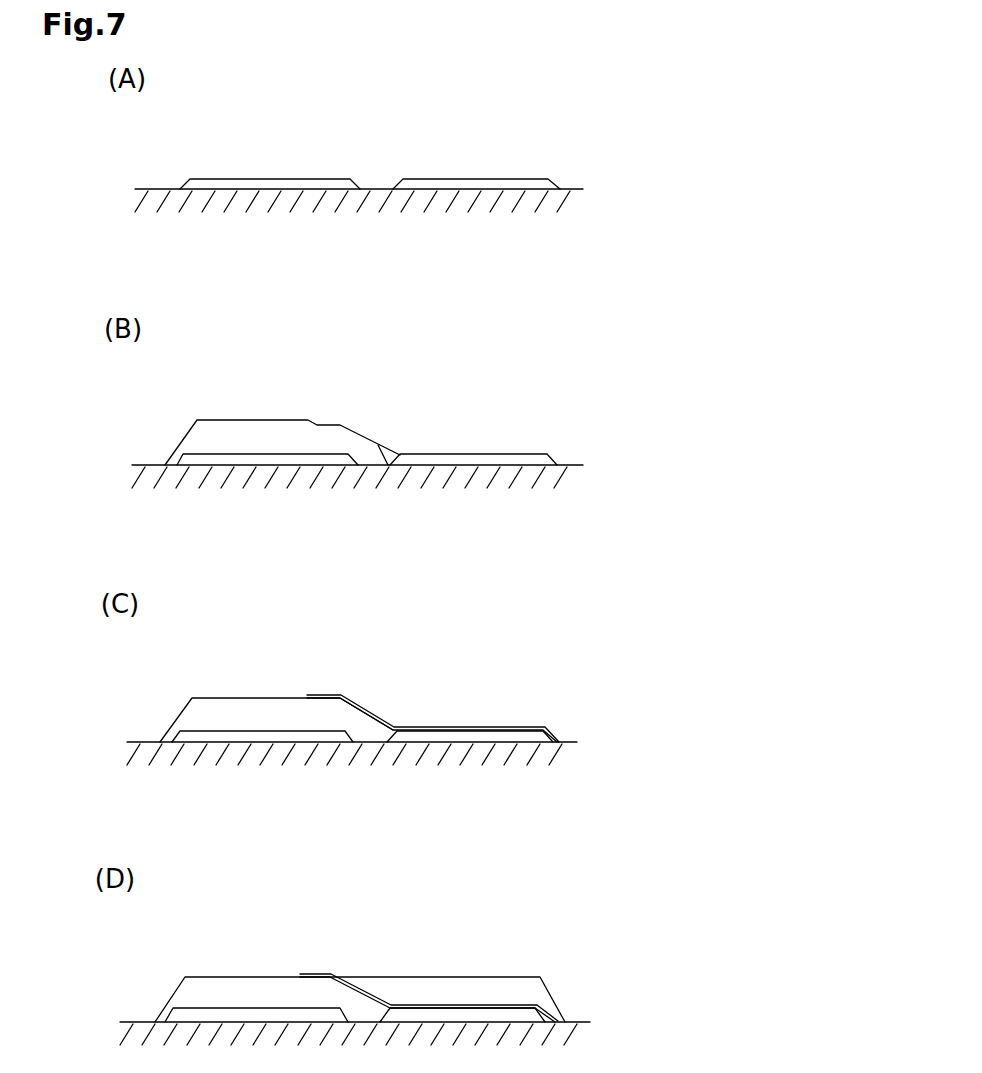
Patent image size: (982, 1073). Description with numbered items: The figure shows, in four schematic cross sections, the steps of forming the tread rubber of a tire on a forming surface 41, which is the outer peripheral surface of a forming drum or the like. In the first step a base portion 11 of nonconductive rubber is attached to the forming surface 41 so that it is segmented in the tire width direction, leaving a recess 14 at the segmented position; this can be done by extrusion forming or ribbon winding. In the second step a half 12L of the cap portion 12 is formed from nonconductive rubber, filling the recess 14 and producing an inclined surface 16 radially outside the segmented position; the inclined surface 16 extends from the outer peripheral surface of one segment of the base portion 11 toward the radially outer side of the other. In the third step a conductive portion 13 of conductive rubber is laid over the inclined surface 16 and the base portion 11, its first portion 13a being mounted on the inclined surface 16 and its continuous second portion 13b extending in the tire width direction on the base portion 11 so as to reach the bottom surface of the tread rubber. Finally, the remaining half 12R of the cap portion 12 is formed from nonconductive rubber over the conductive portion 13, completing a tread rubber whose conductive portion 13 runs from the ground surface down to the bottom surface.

The forming surface 41 is at (160, 188).
The base portion 11 is at (270, 185).
The recess 14 is at (375, 188).
The cap portion 12 is at (364, 694).
The half of the cap portion 12L is at (270, 425).
The remaining half of the cap portion 12R is at (480, 990).
The inclined surface 16 is at (357, 432).
The conductive portion 13 is at (487, 728).
The first portion 13a is at (352, 702).
The second portion 13b is at (435, 728).